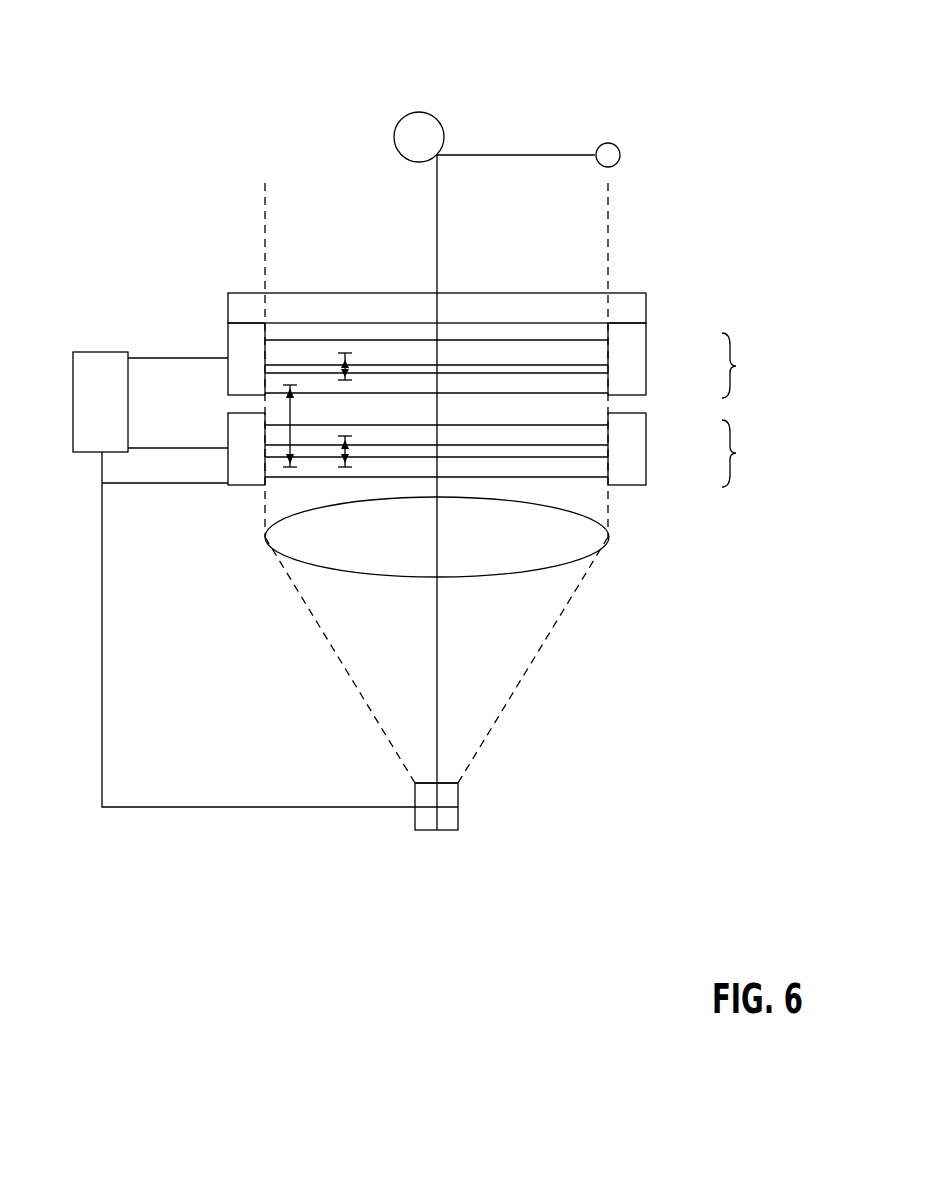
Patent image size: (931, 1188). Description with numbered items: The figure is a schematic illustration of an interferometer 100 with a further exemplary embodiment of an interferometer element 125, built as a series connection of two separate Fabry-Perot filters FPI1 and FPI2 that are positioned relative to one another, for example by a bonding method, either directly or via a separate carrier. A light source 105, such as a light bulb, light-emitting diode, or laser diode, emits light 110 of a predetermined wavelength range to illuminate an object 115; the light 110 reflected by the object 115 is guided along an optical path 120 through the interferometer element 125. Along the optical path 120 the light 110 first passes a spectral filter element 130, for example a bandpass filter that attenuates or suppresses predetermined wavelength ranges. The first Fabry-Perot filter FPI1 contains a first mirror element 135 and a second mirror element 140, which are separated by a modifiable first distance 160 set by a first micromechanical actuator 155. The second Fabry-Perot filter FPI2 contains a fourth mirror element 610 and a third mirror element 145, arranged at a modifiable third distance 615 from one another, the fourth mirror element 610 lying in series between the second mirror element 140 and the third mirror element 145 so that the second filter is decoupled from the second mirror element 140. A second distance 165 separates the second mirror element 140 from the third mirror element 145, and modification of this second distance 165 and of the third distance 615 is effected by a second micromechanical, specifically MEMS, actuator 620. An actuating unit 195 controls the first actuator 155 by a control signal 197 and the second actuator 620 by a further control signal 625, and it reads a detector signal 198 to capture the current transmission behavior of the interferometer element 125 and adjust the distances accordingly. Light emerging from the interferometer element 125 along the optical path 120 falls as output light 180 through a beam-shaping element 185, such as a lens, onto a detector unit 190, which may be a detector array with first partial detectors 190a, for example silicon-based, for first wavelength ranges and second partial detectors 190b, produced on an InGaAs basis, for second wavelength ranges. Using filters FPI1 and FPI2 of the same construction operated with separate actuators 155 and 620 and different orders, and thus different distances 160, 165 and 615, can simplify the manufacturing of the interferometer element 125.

The interferometer 100 is at (112, 199).
The light source 105 is at (607, 143).
The light 110 is at (520, 154).
The object 115 is at (419, 112).
The optical path 120 is at (449, 220).
The interferometer element 125 is at (242, 549).
The spectral filter element 130 is at (628, 308).
The first mirror element 135 is at (592, 350).
The second mirror element 140 is at (593, 382).
The third mirror element 145 is at (593, 467).
The first micromechanical actuator 155 is at (237, 342).
The first distance 160 is at (350, 364).
The second distance 165 is at (293, 414).
The output light 180 is at (438, 525).
The beam-shaping element 185 is at (560, 538).
The detector unit 190 is at (479, 851).
The first partial detectors 190a is at (448, 795).
The second partial detectors 190b is at (452, 818).
The actuating unit 195 is at (100, 402).
The control signal 197 is at (157, 357).
The detector signal 198 is at (142, 485).
The fourth mirror element 610 is at (592, 433).
The third distance 615 is at (348, 450).
The second micromechanical actuator 620 is at (245, 473).
The further control signal 625 is at (157, 447).
The first Fabry-Perot filter FPI1 is at (695, 360).
The second Fabry-Perot filter FPI2 is at (695, 450).